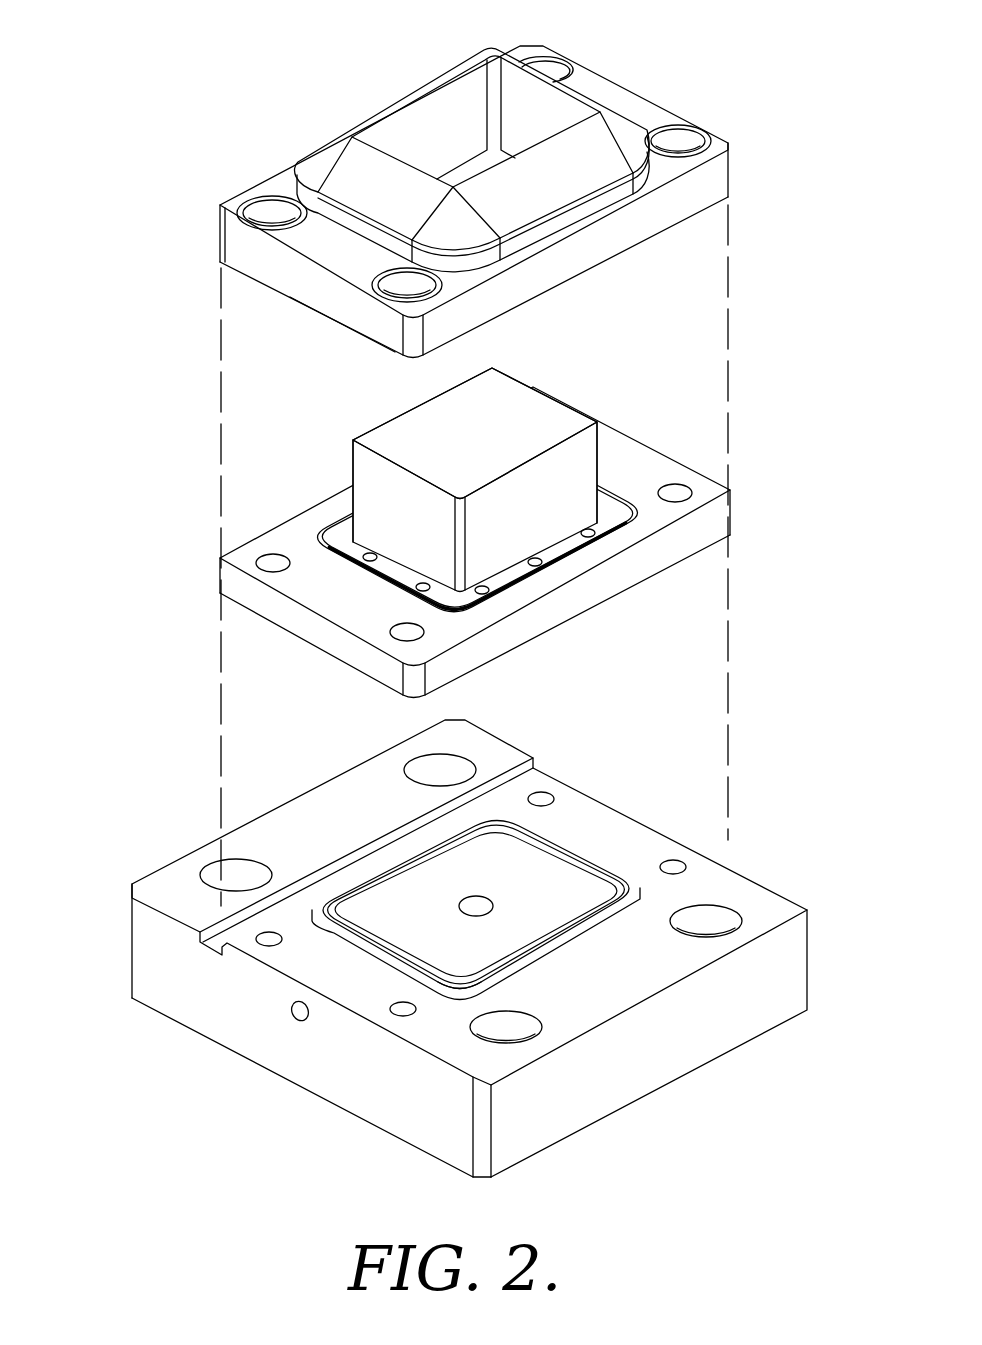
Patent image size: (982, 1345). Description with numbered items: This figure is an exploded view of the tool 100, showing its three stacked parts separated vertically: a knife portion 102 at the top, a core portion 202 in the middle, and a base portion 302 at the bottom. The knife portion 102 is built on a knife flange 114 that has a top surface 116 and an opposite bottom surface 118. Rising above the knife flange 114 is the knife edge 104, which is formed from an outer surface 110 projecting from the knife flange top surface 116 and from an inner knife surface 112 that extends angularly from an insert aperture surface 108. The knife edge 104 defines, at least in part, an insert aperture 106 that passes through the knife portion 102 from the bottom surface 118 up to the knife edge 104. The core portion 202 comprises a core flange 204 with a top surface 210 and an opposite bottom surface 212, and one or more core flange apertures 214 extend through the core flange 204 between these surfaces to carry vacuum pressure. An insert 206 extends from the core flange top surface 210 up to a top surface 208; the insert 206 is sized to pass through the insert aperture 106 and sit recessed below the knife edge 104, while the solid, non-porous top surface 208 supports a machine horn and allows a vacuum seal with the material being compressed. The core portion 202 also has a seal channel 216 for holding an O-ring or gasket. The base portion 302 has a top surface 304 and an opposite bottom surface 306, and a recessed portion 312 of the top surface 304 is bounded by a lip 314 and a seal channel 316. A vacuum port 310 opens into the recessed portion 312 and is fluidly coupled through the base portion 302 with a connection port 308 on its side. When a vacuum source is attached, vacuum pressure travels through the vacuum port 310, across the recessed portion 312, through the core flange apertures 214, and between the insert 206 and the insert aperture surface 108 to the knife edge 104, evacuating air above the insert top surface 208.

The tool 100 is at (122, 138).
The knife portion 102 is at (667, 110).
The knife edge 104 is at (437, 83).
The insert aperture 106 is at (504, 152).
The insert aperture surface 108 is at (458, 100).
The outer surface 110 is at (352, 170).
The inner knife surface 112 is at (383, 113).
The knife flange 114 is at (233, 243).
The top surface 116 is at (275, 187).
The bottom surface 118 is at (345, 330).
The core portion 202 is at (723, 488).
The core flange 204 is at (640, 466).
The insert 206 is at (573, 450).
The top surface 208 is at (510, 392).
The top surface 210 is at (237, 558).
The bottom surface 212 is at (347, 668).
The core flange apertures 214 is at (366, 558).
The seal channel 216 is at (636, 520).
The base portion 302 is at (808, 904).
The top surface 304 is at (727, 884).
The bottom surface 306 is at (776, 1022).
The connection port 308 is at (291, 1008).
The vacuum port 310 is at (478, 895).
The recessed portion 312 is at (395, 928).
The lip 314 is at (418, 968).
The seal channel 316 is at (471, 985).